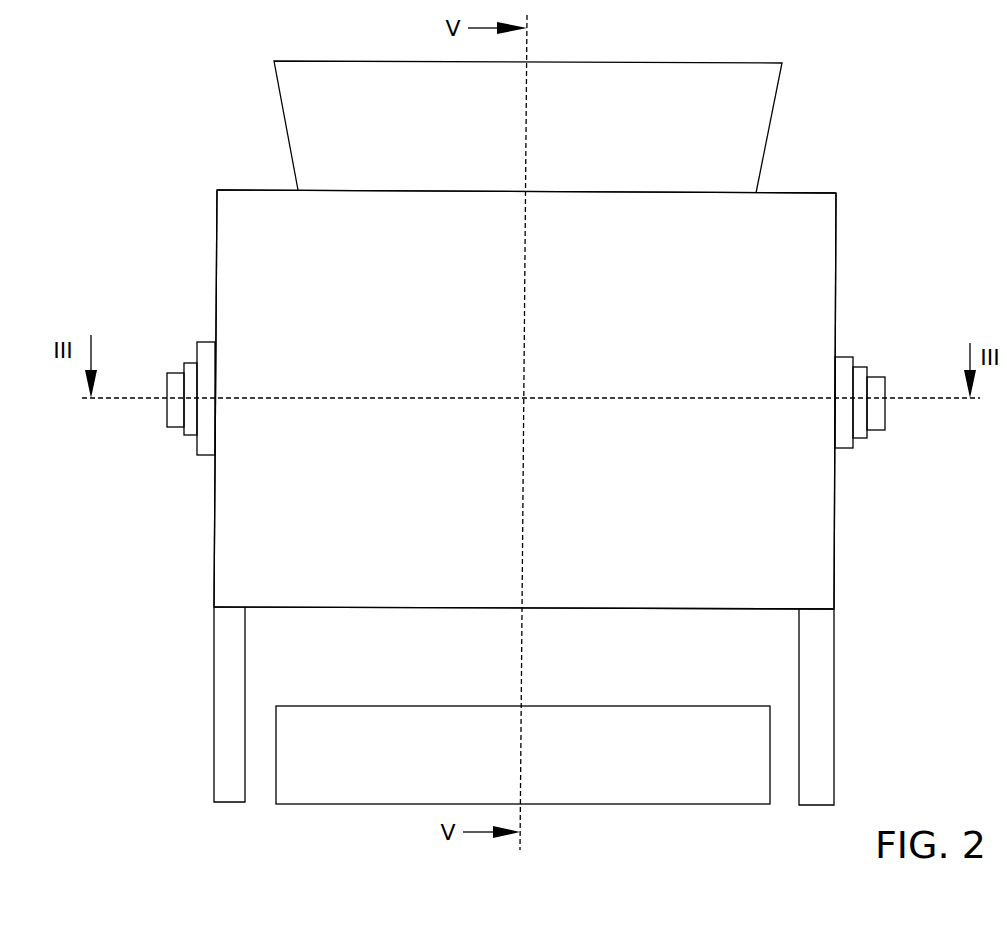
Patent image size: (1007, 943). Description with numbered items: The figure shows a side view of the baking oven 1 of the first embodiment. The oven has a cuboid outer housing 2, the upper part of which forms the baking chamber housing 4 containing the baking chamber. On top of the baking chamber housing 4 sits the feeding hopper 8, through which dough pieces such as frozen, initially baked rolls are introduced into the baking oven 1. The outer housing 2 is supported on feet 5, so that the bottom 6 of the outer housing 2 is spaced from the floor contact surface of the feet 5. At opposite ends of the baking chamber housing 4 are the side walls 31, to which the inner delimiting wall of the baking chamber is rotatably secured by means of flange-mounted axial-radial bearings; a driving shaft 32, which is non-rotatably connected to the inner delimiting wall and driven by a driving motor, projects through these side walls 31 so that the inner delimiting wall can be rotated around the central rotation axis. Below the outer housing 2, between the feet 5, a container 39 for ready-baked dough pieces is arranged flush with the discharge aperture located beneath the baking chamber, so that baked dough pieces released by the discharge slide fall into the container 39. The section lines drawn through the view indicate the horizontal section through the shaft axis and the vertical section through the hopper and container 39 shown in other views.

The baking oven 1 is at (884, 220).
The outer housing 2 is at (814, 184).
The baking chamber housing 4 is at (256, 186).
The feet 5 is at (224, 773).
The bottom 6 is at (731, 612).
The feeding hopper 8 is at (765, 105).
The side walls 31 is at (213, 540).
The driving shaft 32 is at (175, 412).
The container 39 is at (603, 785).